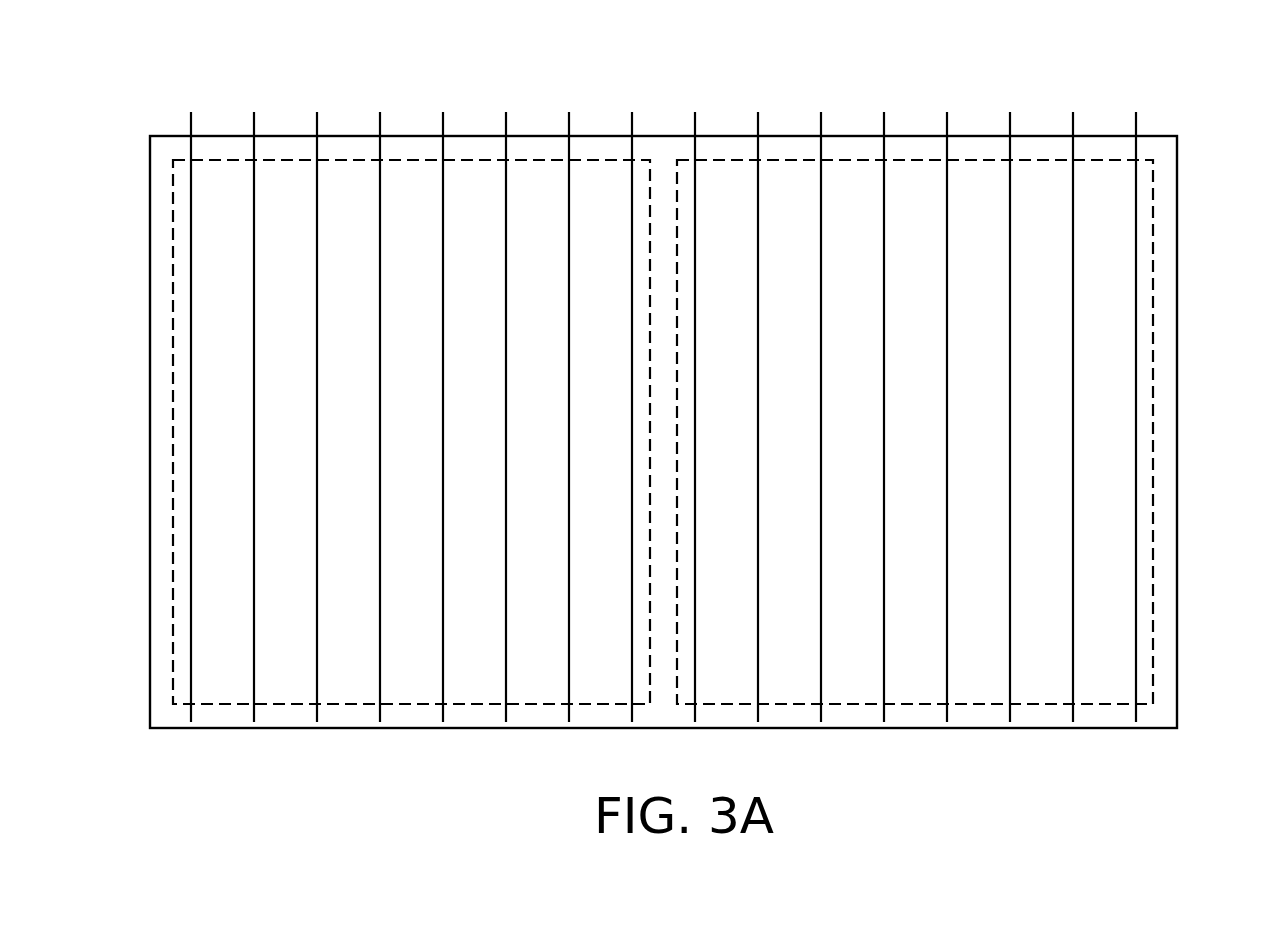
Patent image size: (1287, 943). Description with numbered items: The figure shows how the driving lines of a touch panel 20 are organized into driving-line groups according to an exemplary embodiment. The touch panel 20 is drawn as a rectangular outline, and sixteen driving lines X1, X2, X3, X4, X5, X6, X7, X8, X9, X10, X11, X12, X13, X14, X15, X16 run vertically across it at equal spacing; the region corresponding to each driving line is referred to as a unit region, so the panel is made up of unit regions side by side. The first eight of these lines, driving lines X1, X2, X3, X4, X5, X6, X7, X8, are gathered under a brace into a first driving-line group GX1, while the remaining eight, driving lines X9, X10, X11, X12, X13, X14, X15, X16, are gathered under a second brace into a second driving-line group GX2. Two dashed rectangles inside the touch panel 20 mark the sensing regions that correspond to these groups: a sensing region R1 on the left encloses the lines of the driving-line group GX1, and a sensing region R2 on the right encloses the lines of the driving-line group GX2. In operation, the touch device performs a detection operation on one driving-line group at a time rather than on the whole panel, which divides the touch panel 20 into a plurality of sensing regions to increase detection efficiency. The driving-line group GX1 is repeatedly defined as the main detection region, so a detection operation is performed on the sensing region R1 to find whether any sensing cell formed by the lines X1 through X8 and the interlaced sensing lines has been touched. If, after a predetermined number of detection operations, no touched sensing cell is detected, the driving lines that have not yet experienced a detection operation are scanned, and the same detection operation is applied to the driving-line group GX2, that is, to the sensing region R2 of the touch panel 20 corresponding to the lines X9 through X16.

The touch panel 20 is at (1178, 140).
The sensing region R1 is at (173, 200).
The sensing region R2 is at (1153, 200).
The driving-line group GX1 is at (409, 364).
The driving-line group GX2 is at (922, 364).
The driving line X1 is at (191, 396).
The driving line X2 is at (254, 396).
The driving line X3 is at (317, 396).
The driving line X4 is at (380, 396).
The driving line X5 is at (443, 396).
The driving line X6 is at (506, 396).
The driving line X7 is at (569, 396).
The driving line X8 is at (632, 396).
The driving line X9 is at (695, 396).
The driving line X10 is at (757, 396).
The driving line X11 is at (820, 396).
The driving line X12 is at (883, 396).
The driving line X13 is at (946, 396).
The driving line X14 is at (1009, 396).
The driving line X15 is at (1072, 396).
The driving line X16 is at (1135, 396).